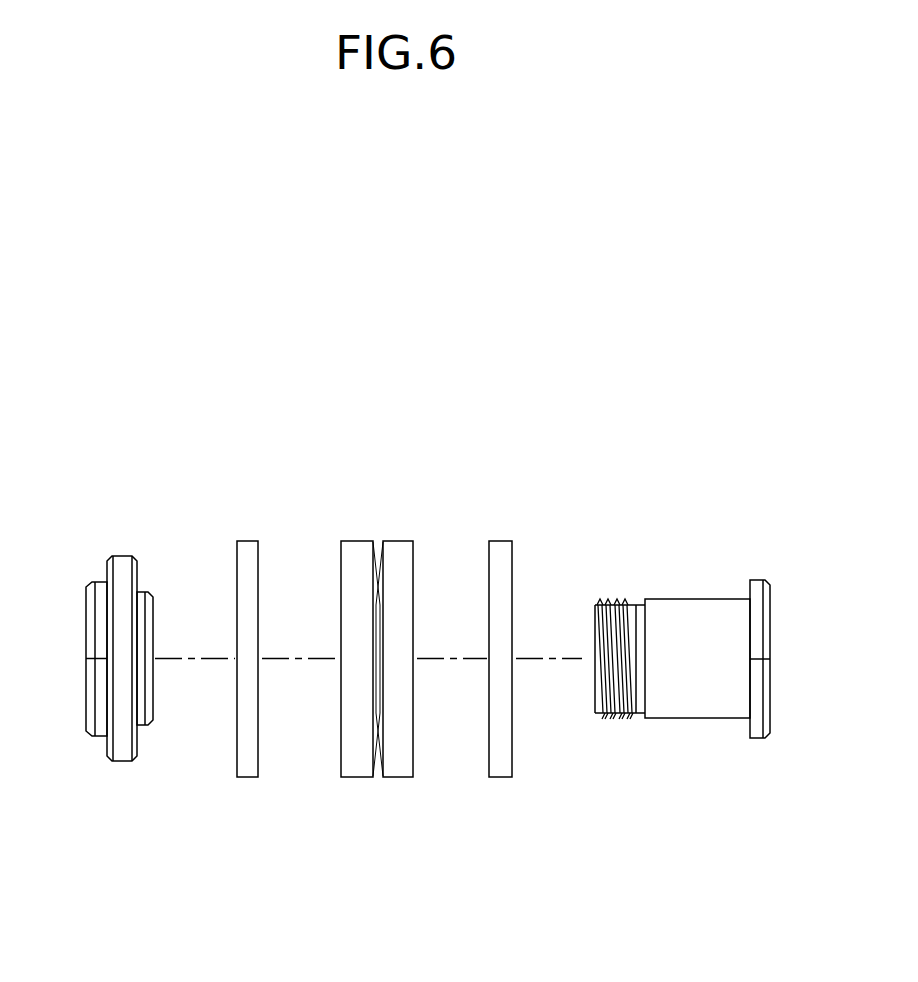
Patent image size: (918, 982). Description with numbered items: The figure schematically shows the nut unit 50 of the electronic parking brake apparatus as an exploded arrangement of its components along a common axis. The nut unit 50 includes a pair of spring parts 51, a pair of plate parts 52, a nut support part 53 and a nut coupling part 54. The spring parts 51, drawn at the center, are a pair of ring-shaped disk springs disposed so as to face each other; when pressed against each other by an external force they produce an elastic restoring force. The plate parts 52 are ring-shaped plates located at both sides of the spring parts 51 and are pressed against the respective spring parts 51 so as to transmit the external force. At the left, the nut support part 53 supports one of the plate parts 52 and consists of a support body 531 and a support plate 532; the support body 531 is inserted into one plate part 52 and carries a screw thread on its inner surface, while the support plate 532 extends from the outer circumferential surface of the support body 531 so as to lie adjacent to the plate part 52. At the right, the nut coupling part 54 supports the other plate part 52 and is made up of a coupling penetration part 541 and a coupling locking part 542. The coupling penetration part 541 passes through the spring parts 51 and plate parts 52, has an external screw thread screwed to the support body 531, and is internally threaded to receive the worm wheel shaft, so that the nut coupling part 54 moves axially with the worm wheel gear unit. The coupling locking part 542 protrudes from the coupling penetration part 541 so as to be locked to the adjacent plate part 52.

The nut unit 50 is at (730, 363).
The spring parts 51 is at (395, 777).
The plate parts 52 is at (245, 777).
The nut support part 53 is at (180, 913).
The support body 531 is at (150, 725).
The support plate 532 is at (123, 761).
The nut coupling part 54 is at (770, 838).
The coupling penetration part 541 is at (690, 718).
The coupling locking part 542 is at (755, 738).